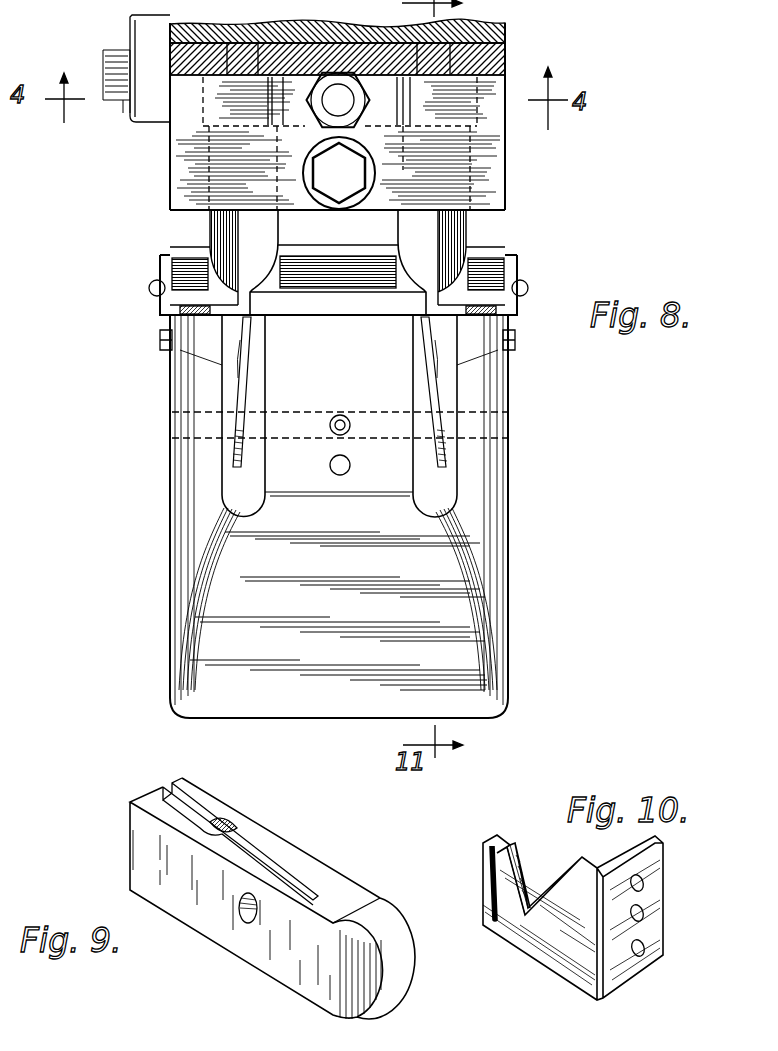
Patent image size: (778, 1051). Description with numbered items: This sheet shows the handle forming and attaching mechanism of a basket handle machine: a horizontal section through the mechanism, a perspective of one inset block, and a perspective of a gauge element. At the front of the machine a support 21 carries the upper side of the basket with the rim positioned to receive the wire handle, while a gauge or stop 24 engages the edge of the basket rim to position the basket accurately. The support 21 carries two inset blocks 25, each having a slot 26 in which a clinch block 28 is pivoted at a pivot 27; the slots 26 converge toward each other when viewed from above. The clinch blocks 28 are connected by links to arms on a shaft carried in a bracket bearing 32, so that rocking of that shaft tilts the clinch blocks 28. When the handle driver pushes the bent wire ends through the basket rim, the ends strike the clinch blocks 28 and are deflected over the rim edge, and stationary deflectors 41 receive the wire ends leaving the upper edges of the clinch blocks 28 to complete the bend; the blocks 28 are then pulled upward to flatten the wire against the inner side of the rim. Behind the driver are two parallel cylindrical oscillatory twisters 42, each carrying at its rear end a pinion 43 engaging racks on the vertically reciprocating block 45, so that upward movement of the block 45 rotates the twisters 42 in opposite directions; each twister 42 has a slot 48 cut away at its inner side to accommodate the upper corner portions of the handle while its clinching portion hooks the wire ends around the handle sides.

In FIG. 8, the support 21 is at (297, 553).
In FIG. 8, the gauge or stop 24 is at (513, 313).
In FIG. 10, the gauge or stop 24 is at (652, 885).
In FIG. 8, the inset block 25 is at (437, 502).
In FIG. 9, the inset block 25 is at (290, 860).
In FIG. 8, the slot 26 is at (445, 463).
In FIG. 9, the slot 26 is at (238, 842).
In FIG. 8, the pivot 27 is at (297, 412).
In FIG. 9, the pivot 27 is at (243, 913).
In FIG. 8, the clinch block 28 is at (430, 340).
In FIG. 8, the bracket bearing 32 is at (147, 98).
In FIG. 10, the stationary deflector 41 is at (490, 888).
In FIG. 8, the twister 42 is at (445, 190).
In FIG. 8, the pinion 43 is at (487, 125).
In FIG. 8, the vertically reciprocating block 45 is at (380, 117).
In FIG. 8, the slot 48 is at (430, 230).